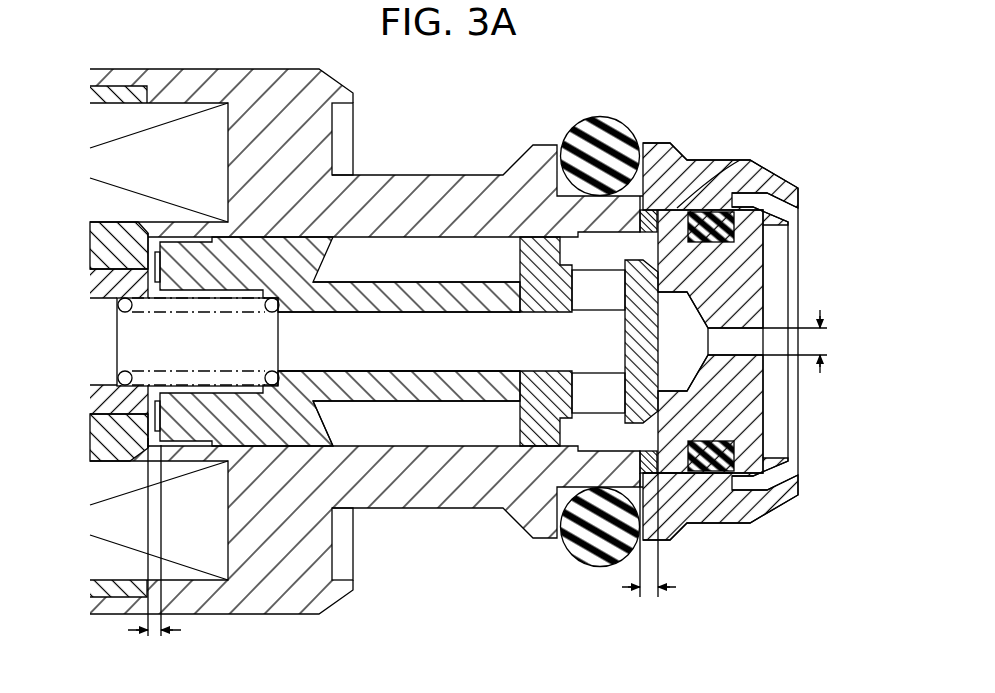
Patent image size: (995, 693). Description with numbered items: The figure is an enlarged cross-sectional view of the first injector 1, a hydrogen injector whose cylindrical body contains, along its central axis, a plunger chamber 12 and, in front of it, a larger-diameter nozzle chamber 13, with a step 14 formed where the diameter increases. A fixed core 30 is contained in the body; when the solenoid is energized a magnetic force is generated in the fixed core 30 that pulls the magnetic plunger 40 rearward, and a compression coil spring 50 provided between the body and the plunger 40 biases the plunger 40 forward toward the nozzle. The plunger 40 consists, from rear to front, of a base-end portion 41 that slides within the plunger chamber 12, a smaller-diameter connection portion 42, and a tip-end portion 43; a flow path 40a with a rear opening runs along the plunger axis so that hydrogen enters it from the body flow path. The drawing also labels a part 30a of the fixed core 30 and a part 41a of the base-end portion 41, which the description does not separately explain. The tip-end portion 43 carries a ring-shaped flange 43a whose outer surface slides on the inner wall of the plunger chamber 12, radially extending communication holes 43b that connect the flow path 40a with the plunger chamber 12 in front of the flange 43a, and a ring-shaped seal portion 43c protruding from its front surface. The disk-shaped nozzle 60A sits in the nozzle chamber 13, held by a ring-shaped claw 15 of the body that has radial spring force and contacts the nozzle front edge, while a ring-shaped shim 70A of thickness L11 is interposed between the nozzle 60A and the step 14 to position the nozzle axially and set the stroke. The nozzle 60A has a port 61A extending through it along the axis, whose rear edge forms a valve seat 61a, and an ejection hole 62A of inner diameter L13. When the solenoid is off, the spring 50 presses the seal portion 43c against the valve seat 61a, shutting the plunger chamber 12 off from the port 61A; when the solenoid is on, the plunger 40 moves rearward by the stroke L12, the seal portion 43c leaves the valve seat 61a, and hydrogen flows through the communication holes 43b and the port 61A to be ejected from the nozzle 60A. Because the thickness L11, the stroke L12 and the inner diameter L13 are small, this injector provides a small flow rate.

The first injector 1 is at (464, 112).
The plunger chamber 12 is at (384, 431).
The nozzle chamber 13 is at (760, 494).
The step 14 is at (640, 216).
The claw 15 is at (799, 217).
The fixed core 30 is at (93, 243).
The inner surface of frame 30a is at (146, 230).
The plunger 40 is at (432, 280).
The flow path 40a is at (432, 373).
The base-end portion 41 is at (261, 246).
The end of sleeve 41a is at (158, 296).
The connection portion 42 is at (392, 288).
The tip-end portion 43 is at (540, 290).
The flange 43a is at (533, 428).
The communication holes 43b is at (593, 395).
The seal portion 43c is at (741, 160).
The compression coil spring 50 is at (222, 312).
The nozzle 60A is at (769, 270).
The port 61A is at (682, 345).
The valve seat 61a is at (672, 478).
The ejection hole 62A is at (735, 340).
The shim 70A is at (676, 168).
The thickness L11 is at (649, 548).
The stroke L12 is at (154, 550).
The inner diameter L13 is at (787, 341).